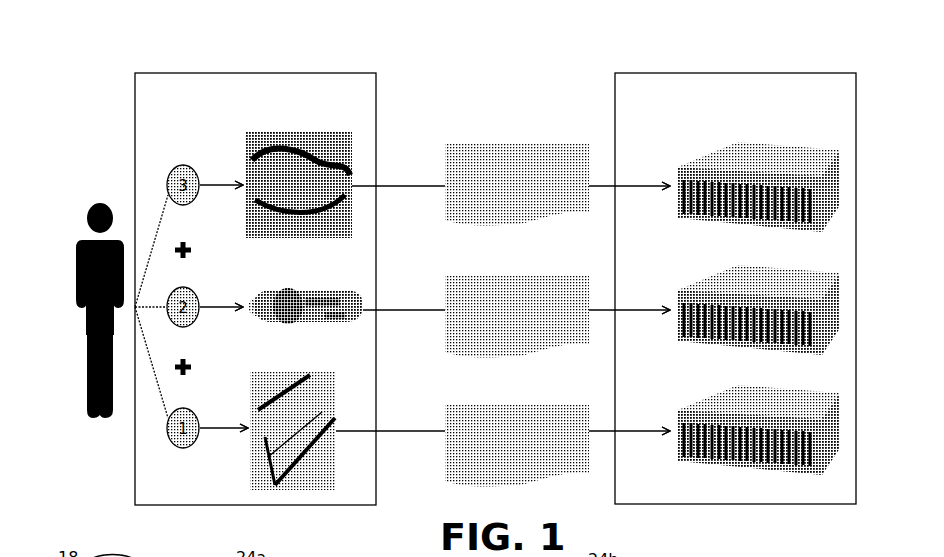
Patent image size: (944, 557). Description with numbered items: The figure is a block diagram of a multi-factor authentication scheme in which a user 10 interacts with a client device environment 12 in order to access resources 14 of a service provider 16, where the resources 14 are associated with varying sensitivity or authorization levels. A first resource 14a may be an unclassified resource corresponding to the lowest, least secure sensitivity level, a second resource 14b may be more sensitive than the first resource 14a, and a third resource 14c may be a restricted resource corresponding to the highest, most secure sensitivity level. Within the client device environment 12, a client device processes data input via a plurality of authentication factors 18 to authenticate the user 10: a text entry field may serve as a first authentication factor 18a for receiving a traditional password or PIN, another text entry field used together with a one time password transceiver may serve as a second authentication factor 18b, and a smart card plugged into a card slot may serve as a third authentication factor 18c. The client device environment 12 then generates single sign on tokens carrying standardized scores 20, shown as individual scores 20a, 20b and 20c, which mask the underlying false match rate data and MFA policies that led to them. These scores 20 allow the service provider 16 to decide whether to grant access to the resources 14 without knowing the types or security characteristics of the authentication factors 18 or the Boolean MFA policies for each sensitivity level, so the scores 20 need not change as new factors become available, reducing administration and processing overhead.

The user 10 is at (100, 203).
The client device environment 12 is at (196, 73).
The resources 14 is at (791, 482).
The first resource 14a is at (680, 444).
The second resource 14b is at (680, 321).
The third resource 14c is at (680, 197).
The service provider 16 is at (688, 73).
The authentication factors 18 is at (334, 94).
The first authentication factor 18a is at (307, 372).
The second authentication factor 18b is at (327, 275).
The third authentication factor 18c is at (247, 152).
The standardized scores 20 is at (515, 115).
The standardized score 20a is at (445, 470).
The standardized score 20b is at (445, 327).
The standardized score 20c is at (445, 204).